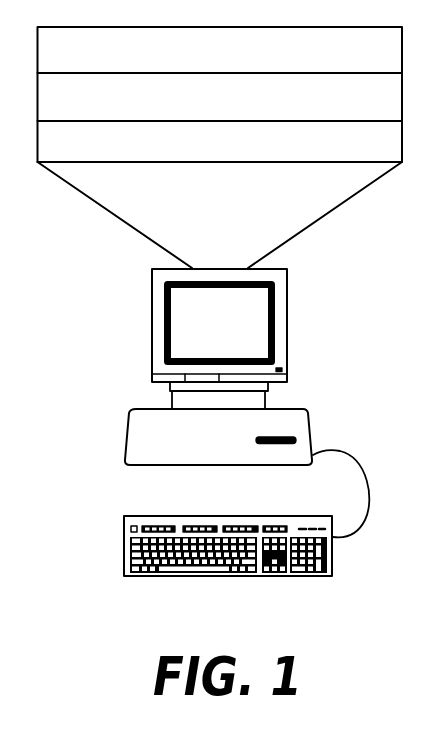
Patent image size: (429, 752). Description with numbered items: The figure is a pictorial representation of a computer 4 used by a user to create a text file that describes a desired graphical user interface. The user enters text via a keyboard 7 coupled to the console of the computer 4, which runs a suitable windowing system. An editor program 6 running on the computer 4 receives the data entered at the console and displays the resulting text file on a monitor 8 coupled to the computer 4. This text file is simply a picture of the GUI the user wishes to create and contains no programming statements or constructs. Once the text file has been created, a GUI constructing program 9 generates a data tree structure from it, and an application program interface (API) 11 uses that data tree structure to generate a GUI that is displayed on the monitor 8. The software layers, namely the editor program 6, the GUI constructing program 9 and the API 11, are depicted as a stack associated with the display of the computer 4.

The computer 4 is at (292, 408).
The editor program 6 is at (284, 154).
The keyboard 7 is at (137, 516).
The monitor 8 is at (208, 331).
The GUI constructing program 9 is at (396, 110).
The application program interface (API) 11 is at (248, 62).